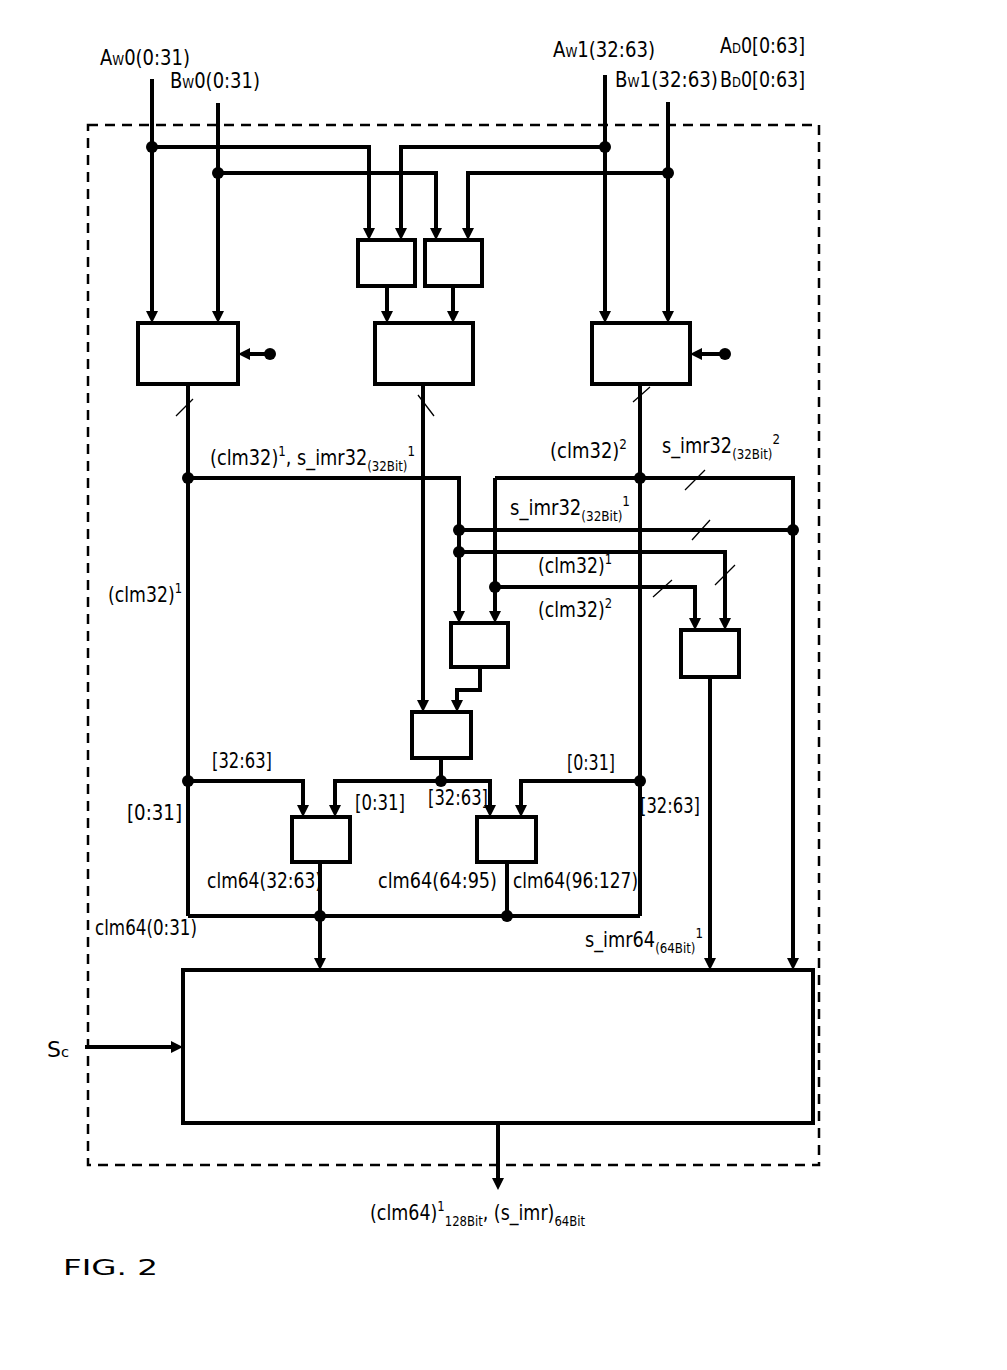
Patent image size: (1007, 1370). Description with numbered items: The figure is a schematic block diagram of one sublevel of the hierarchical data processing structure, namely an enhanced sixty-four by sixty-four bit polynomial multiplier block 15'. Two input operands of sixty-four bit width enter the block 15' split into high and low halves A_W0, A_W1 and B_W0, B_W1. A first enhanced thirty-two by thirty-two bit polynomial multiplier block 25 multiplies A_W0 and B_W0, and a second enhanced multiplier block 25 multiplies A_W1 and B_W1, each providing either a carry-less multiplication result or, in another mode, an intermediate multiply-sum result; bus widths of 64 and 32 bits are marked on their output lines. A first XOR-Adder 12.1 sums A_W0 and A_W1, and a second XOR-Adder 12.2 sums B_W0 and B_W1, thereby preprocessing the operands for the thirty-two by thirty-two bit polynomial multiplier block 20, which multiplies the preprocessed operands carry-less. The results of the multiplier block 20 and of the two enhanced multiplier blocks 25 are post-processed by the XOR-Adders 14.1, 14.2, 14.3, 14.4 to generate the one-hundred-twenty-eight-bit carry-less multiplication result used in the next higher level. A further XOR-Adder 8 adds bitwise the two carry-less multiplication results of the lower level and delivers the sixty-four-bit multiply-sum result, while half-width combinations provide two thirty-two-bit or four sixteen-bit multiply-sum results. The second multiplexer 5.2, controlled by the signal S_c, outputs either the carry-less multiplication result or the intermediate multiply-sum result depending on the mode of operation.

The enhanced 64×64 bit polynomial multiplier block 15' is at (434, 585).
The first XOR-Adder 12.1 is at (364, 247).
The second XOR-Adder 12.2 is at (474, 249).
The enhanced 32×32 bit polynomial multiplier block 25 is at (142, 322).
The 32×32 bit polynomial multiplier block 20 is at (382, 338).
The XOR-Adder 14.1 is at (498, 654).
The XOR-Adder 14.2 is at (412, 727).
The XOR-Adder 14.3 is at (300, 838).
The XOR-Adder 14.4 is at (527, 838).
The further XOR-Adder 8 is at (722, 667).
The second multiplexer 5.2 is at (732, 1113).
The 64-bit bus 64 is at (448, 650).
The 32-bit bus 32 is at (629, 720).